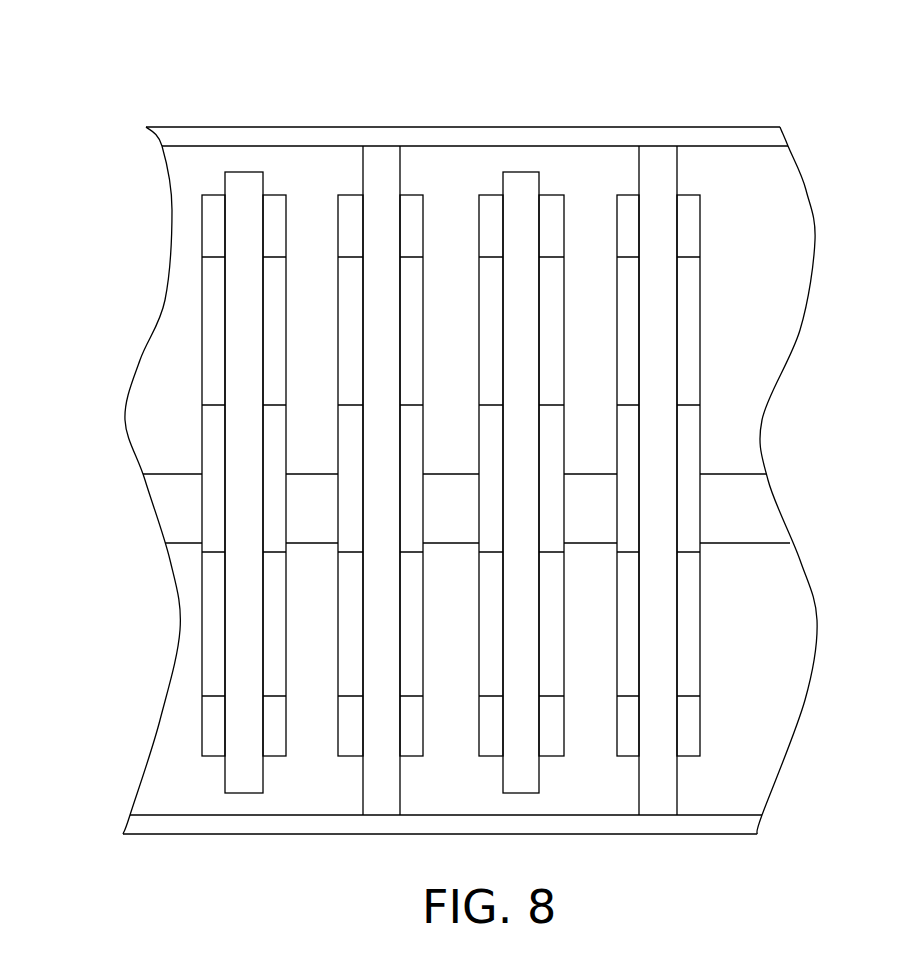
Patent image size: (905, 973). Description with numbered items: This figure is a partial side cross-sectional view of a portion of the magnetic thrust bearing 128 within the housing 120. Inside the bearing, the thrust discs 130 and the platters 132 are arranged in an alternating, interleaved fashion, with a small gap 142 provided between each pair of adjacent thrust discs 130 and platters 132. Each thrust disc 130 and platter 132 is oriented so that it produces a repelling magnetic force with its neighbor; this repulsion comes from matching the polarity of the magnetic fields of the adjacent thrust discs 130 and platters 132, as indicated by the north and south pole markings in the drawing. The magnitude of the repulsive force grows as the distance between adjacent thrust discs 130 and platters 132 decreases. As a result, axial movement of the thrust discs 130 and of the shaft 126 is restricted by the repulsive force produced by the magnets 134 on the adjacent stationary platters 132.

The housing 120 is at (257, 138).
The shaft 126 is at (163, 512).
The magnetic thrust bearing 128 is at (732, 277).
The thrust disc 130 is at (247, 192).
The platter 132 is at (377, 166).
The magnet 134 is at (205, 215).
The gap 142 is at (592, 206).